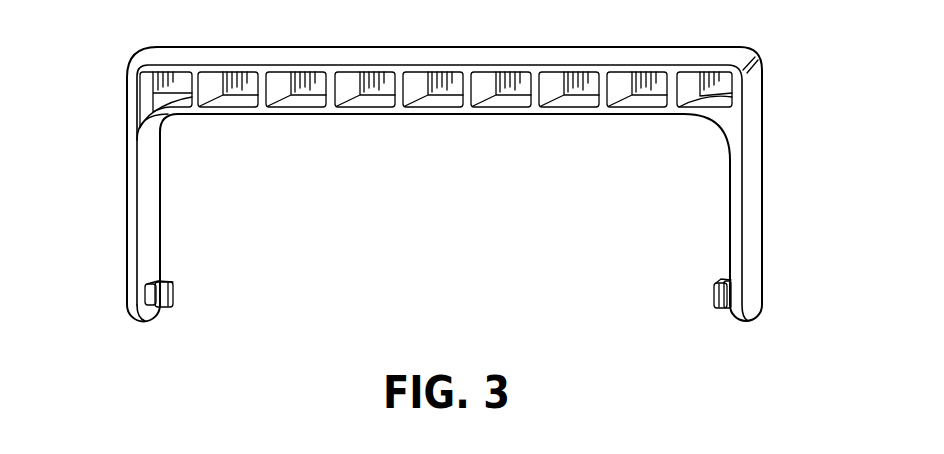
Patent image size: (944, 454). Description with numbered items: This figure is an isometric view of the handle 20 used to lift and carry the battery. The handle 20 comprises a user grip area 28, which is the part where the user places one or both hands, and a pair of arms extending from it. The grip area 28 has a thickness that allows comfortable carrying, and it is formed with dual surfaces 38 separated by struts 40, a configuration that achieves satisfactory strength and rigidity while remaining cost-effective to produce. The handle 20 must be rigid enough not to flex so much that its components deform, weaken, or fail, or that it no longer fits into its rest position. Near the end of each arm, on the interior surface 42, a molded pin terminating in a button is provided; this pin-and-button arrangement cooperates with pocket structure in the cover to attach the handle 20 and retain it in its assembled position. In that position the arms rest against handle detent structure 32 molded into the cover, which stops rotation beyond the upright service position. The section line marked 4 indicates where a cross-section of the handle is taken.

The handle 20 is at (127, 86).
The user grip area 28 is at (207, 57).
The handle detent structure 32 is at (132, 202).
The dual surfaces 38 is at (680, 126).
The struts 40 is at (537, 90).
The interior surface 42 is at (200, 293).
The section line 4- 4 is at (80, 254).